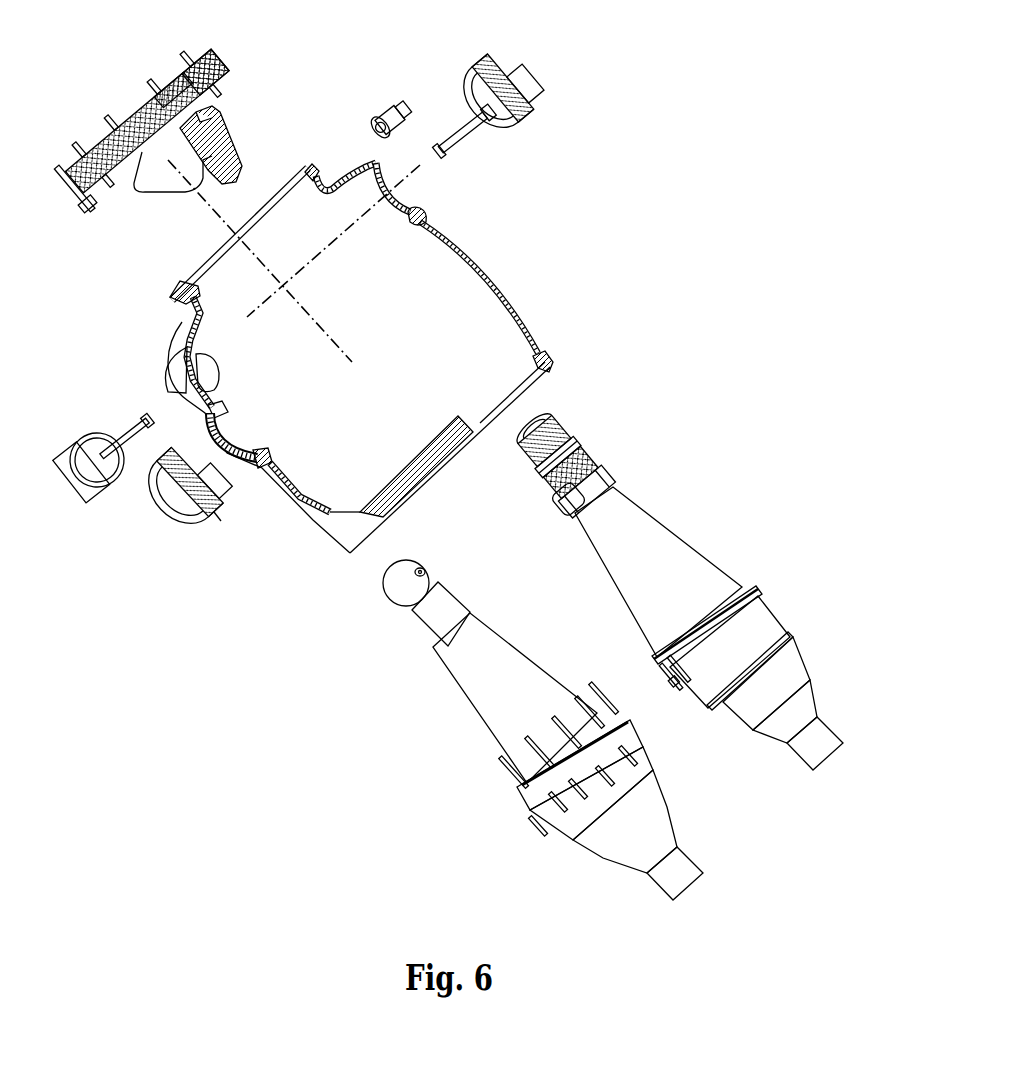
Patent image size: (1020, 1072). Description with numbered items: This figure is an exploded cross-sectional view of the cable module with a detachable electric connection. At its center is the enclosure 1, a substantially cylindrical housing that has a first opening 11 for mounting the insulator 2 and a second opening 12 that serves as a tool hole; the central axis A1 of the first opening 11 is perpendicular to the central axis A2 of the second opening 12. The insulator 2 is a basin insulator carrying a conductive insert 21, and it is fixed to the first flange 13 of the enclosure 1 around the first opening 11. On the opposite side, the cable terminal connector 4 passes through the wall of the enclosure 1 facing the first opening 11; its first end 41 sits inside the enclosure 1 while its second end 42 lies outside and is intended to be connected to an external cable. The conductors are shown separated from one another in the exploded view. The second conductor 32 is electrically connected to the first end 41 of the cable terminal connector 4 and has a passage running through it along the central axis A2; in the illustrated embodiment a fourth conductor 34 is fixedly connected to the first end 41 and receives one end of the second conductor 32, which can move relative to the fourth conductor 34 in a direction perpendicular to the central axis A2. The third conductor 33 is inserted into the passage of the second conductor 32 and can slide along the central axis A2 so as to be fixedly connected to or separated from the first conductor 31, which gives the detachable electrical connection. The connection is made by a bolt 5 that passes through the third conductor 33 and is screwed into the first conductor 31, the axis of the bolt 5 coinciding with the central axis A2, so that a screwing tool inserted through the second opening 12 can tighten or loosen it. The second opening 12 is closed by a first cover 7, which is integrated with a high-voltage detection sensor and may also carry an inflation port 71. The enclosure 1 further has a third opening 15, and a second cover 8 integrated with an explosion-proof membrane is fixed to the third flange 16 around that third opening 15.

The enclosure 1 is at (172, 343).
The first opening 11 is at (276, 215).
The second opening 12 is at (406, 202).
The first flange 13 is at (174, 302).
The third opening 15 is at (233, 458).
The third flange 16 is at (260, 470).
The insulator 2 is at (115, 150).
The conductive insert 21 is at (173, 110).
The first conductor 31 is at (218, 152).
The second conductor 32 is at (545, 432).
The third conductor 33 is at (582, 445).
The fourth conductor 34 is at (598, 466).
The cable terminal connector 4 is at (640, 556).
The first end 41 is at (595, 497).
The second end 42 is at (815, 740).
The bolt 5 is at (460, 118).
The first cover 7 is at (532, 68).
The inflation port 71 is at (390, 110).
The second cover 8 is at (182, 495).
The central axis of the first opening A1 is at (208, 235).
The central axis of the second opening A2 is at (410, 171).